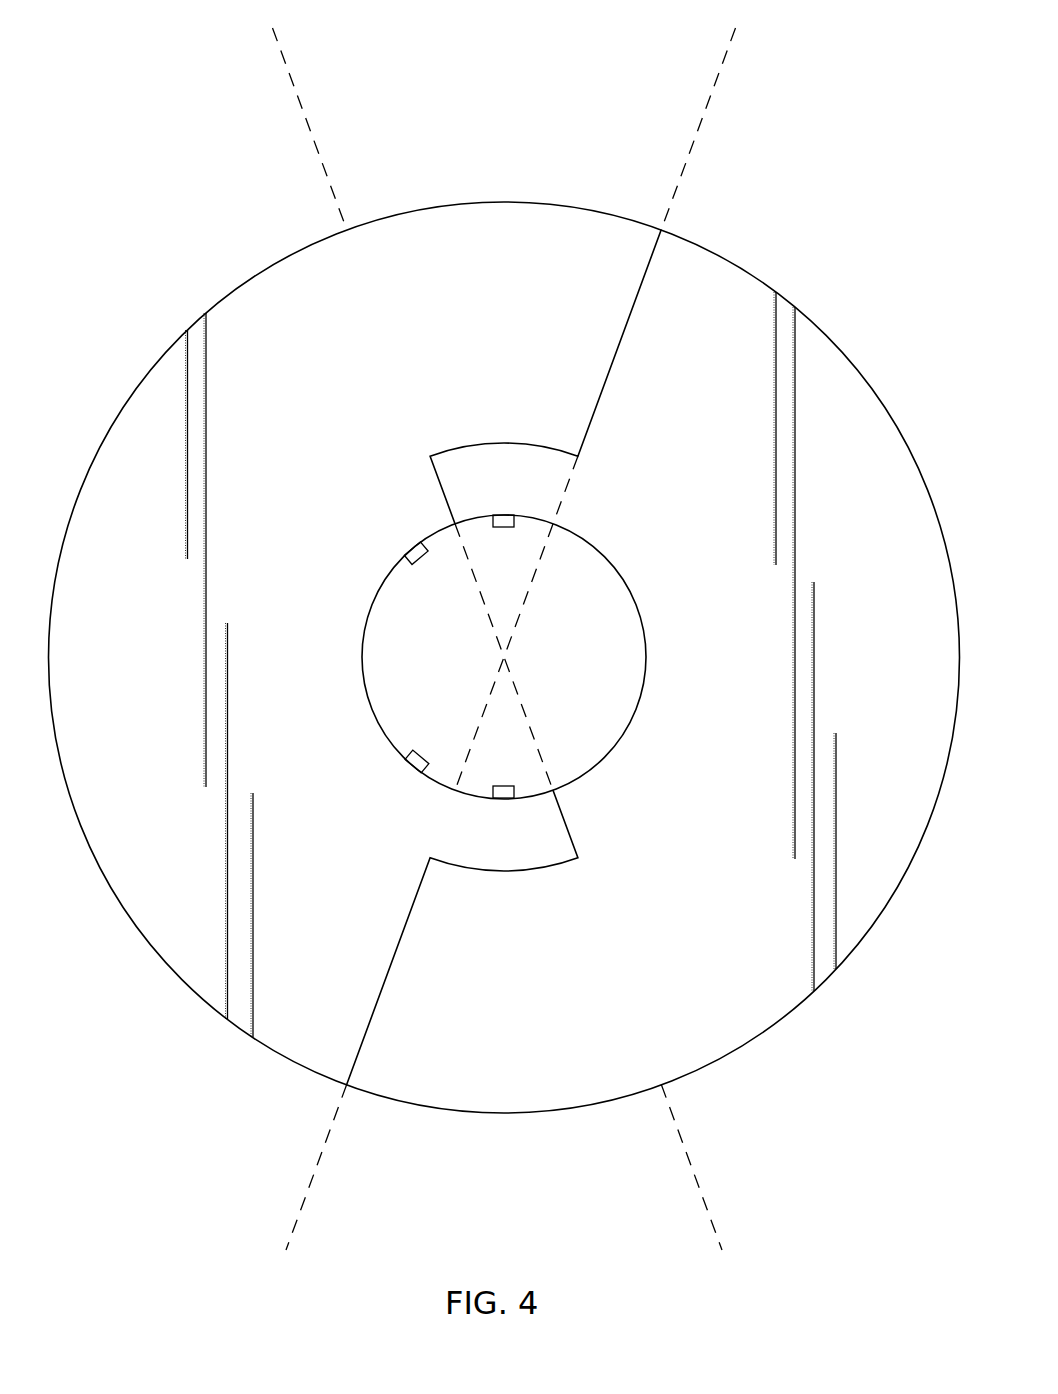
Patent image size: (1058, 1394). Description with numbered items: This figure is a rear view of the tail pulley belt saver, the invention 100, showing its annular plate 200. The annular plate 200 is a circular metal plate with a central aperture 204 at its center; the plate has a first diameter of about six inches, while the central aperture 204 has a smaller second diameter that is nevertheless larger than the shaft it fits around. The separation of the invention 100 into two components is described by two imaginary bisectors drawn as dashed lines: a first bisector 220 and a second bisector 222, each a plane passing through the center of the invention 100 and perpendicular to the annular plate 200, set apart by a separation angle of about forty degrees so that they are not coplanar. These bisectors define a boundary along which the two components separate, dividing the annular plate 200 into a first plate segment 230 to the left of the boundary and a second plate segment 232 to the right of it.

The invention 100 is at (124, 178).
The annular plate 200 is at (150, 944).
The central aperture 204 is at (640, 692).
The first bisector 220 is at (520, 628).
The second bisector 222 is at (485, 628).
The first plate segment 230 is at (753, 1025).
The second plate segment 232 is at (312, 1047).